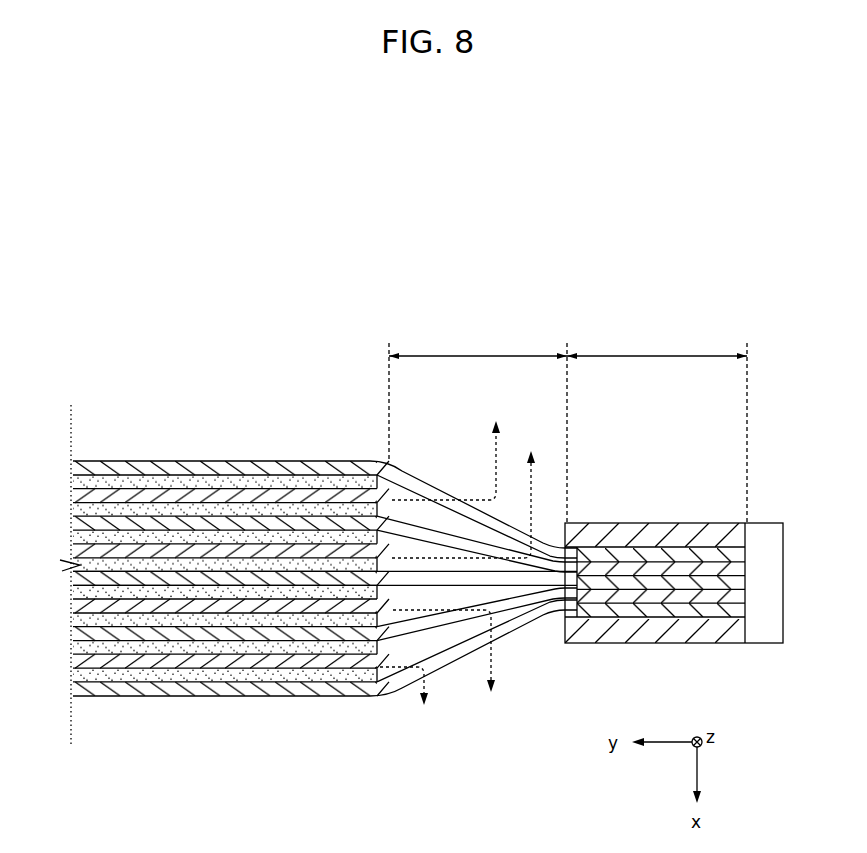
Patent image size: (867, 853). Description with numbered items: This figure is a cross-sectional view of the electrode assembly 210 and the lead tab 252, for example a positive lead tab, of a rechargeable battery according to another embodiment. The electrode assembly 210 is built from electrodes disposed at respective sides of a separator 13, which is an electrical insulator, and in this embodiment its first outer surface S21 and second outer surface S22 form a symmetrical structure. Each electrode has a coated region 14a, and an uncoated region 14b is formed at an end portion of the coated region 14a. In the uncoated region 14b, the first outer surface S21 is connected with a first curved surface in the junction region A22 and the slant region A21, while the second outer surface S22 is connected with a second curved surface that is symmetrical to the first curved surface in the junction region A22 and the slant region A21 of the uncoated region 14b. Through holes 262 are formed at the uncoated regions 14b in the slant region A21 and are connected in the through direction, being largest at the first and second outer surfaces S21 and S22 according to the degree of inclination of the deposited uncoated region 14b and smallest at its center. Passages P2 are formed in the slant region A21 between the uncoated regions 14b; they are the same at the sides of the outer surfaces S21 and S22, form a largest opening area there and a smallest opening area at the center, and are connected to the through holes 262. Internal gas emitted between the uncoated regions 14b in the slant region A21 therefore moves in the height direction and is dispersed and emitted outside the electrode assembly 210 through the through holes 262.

The electrode assembly 210 is at (458, 230).
The separator 13 is at (150, 540).
The coated region 14a is at (263, 527).
The uncoated region 14b is at (673, 318).
The lead tab 252 is at (661, 523).
The through hole 262 is at (533, 542).
The first outer surface S21 is at (157, 705).
The second outer surface S22 is at (171, 455).
The slant region A21 is at (478, 422).
The junction region A22 is at (657, 422).
The passage P2 is at (463, 525).